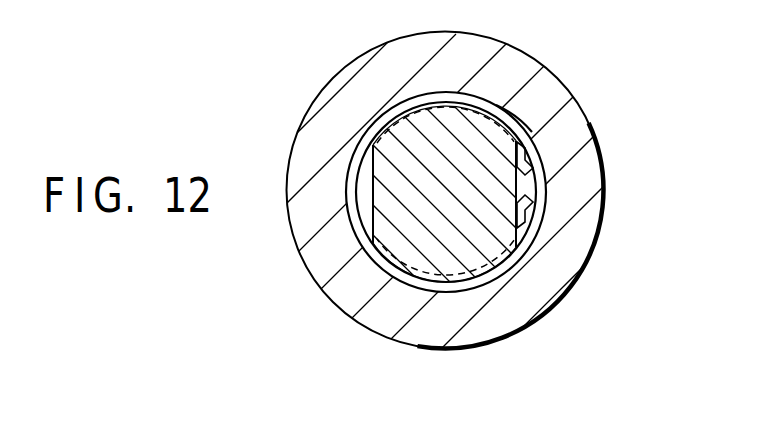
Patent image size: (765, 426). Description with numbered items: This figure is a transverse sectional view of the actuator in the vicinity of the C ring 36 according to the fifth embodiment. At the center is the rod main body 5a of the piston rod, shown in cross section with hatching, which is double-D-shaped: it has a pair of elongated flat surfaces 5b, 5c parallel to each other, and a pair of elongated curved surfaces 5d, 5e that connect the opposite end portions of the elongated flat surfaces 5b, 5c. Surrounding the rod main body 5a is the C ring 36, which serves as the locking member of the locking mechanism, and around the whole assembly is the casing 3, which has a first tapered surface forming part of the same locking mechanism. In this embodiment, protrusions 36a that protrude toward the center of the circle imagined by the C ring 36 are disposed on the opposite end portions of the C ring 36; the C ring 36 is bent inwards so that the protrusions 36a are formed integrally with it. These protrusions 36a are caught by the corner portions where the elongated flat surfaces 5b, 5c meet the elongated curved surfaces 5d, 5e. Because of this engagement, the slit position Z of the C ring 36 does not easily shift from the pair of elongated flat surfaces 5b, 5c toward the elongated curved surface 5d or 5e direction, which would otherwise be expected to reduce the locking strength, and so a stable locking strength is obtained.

The casing 3 is at (566, 282).
The C ring 36 is at (530, 128).
The protrusions 36a is at (532, 168).
The rod main body 5a is at (522, 123).
The elongated flat surface 5b is at (517, 192).
The elongated flat surface 5c is at (373, 190).
The elongated curved surface 5d is at (444, 92).
The elongated curved surface 5e is at (447, 283).
The slit position Z is at (524, 197).